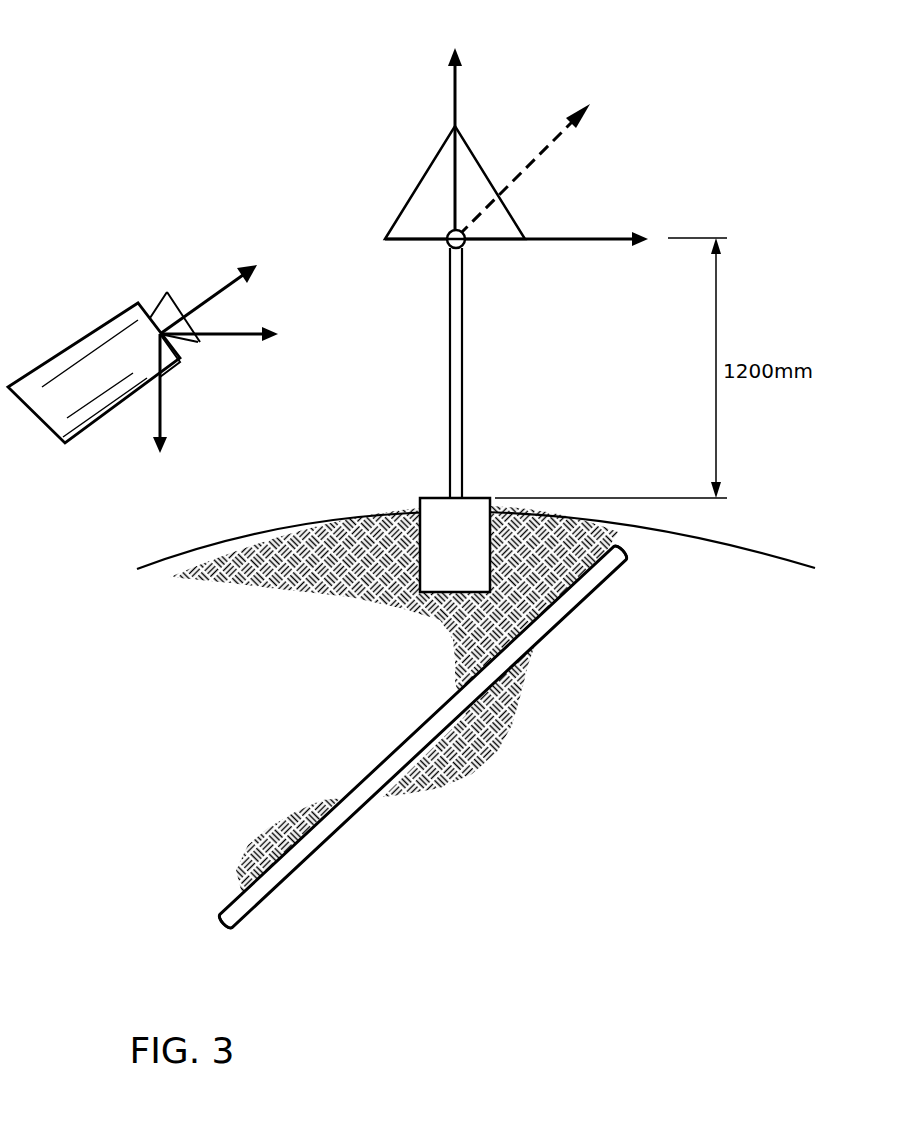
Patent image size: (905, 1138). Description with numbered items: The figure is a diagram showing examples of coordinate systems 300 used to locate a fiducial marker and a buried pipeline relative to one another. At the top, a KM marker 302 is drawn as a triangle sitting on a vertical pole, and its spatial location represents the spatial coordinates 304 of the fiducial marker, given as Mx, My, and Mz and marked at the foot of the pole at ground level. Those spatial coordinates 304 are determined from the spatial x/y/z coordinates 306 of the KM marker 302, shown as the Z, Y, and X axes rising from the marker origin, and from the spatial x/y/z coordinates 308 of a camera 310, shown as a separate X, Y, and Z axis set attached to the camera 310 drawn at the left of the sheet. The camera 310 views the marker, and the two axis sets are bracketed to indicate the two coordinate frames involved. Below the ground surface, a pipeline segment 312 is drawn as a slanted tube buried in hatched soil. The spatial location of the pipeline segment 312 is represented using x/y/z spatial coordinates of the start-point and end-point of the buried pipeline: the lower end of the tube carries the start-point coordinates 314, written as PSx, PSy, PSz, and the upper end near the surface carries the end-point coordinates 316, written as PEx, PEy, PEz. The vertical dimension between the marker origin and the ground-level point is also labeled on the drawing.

The coordinate systems 300 is at (160, 112).
The KM marker 302 is at (418, 181).
The spatial coordinates of the fiducial marker 304 is at (446, 494).
The spatial x/y/z coordinates of the KM marker 306 is at (343, 14).
The spatial x/y/z coordinates of the camera 308 is at (160, 240).
The camera 310 is at (80, 340).
The pipeline segment 312 is at (424, 722).
The start-point coordinates 314 is at (225, 928).
The end-point coordinates 316 is at (627, 549).